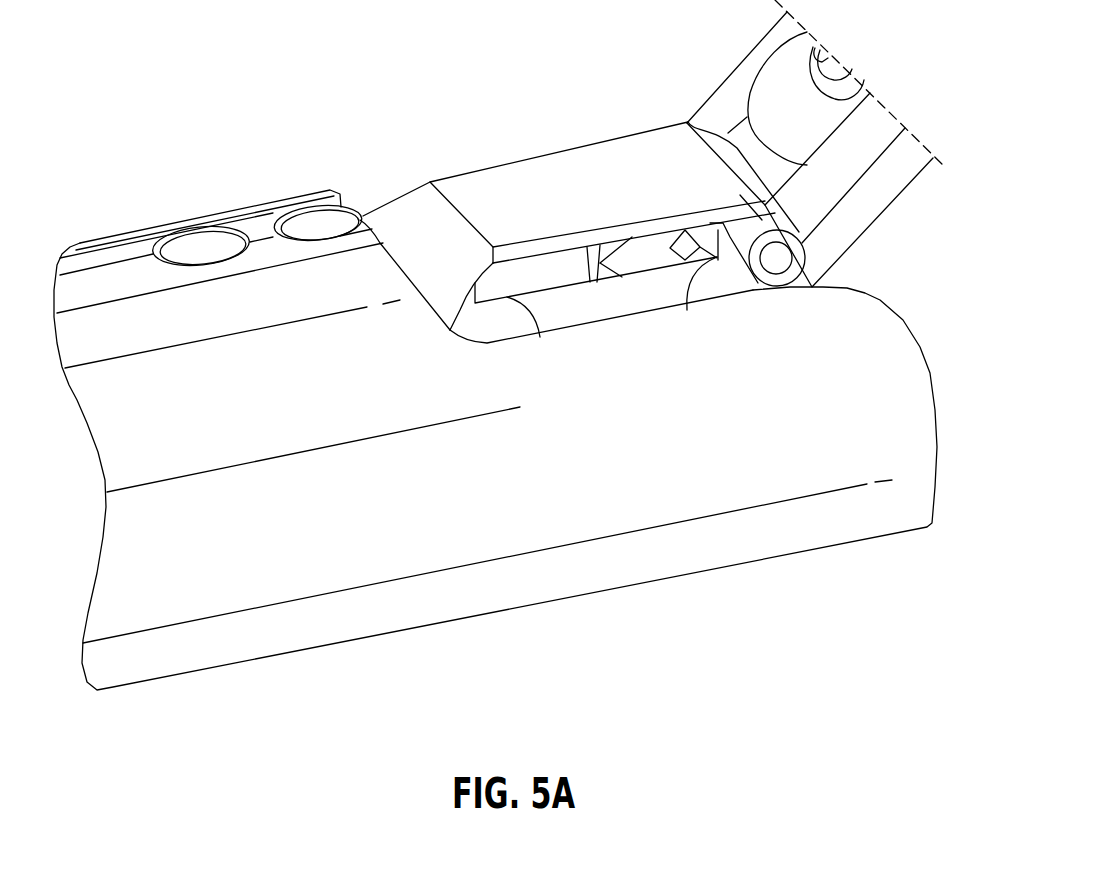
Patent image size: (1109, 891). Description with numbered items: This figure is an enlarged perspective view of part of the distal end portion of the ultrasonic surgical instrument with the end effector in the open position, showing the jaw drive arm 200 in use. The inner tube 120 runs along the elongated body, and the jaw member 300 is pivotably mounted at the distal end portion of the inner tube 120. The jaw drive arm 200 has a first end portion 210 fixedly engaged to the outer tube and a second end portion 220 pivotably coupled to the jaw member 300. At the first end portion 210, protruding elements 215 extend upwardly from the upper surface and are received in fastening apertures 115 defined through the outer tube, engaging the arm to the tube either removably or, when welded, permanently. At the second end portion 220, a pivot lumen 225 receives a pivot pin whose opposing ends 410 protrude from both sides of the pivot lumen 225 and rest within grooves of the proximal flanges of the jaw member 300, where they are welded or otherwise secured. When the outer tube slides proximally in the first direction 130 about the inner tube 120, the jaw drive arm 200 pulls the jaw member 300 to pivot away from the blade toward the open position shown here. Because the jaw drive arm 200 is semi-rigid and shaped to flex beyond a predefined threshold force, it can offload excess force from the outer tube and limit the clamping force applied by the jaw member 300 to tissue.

The fastening aperture 115 is at (283, 203).
The inner tube 120 is at (597, 310).
The first direction 130 is at (662, 545).
The jaw drive arm 200 is at (587, 236).
The first end portion 210 is at (407, 192).
The protruding element 215 is at (318, 233).
The second end portion 220 is at (700, 133).
The pivot lumen 225 is at (724, 232).
The jaw member 300 is at (872, 192).
The opposing ends of the pivot pin 410 is at (783, 258).